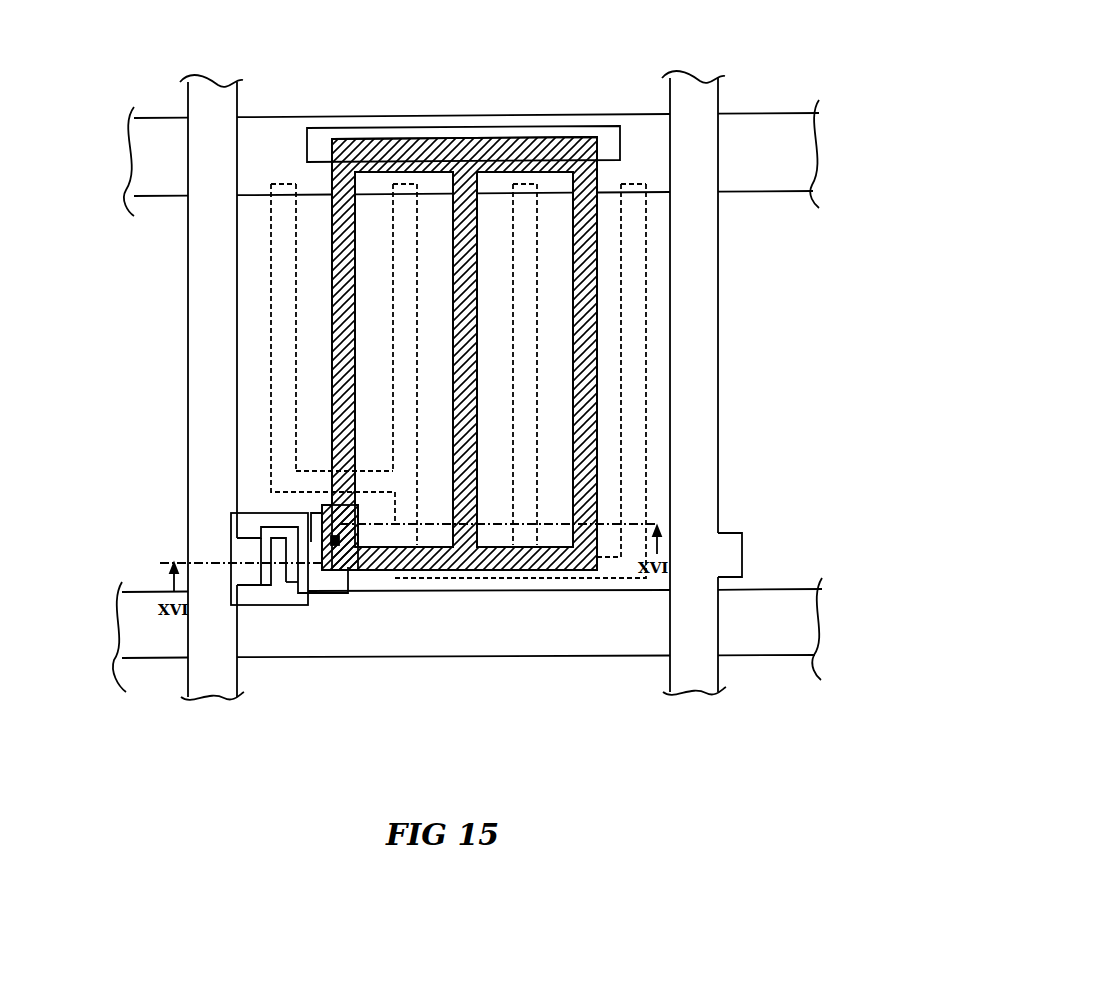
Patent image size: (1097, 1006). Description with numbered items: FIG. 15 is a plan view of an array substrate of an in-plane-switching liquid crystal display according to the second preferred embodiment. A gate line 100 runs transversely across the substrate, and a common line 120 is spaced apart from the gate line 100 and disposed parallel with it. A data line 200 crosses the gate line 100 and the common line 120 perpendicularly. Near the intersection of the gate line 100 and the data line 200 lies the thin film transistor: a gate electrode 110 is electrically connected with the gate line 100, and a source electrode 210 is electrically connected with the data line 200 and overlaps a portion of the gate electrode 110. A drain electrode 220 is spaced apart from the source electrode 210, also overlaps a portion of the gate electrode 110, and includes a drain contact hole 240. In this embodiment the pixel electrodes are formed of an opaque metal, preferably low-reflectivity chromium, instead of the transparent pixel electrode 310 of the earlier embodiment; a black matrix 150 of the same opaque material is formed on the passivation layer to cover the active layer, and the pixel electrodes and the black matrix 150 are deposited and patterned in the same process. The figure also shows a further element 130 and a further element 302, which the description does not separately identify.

The gate line 100 is at (547, 633).
The gate electrode 110 is at (280, 573).
The common line 120 is at (757, 132).
The storage electrode 130 is at (633, 337).
The black matrix 150 is at (263, 606).
The data line 200 is at (213, 470).
The source electrode 210 is at (251, 548).
The drain electrode 220 is at (312, 572).
The drain contact hole 240 is at (338, 548).
The reflective electrode 302 is at (587, 403).
The transparent pixel electrode 310 is at (393, 578).